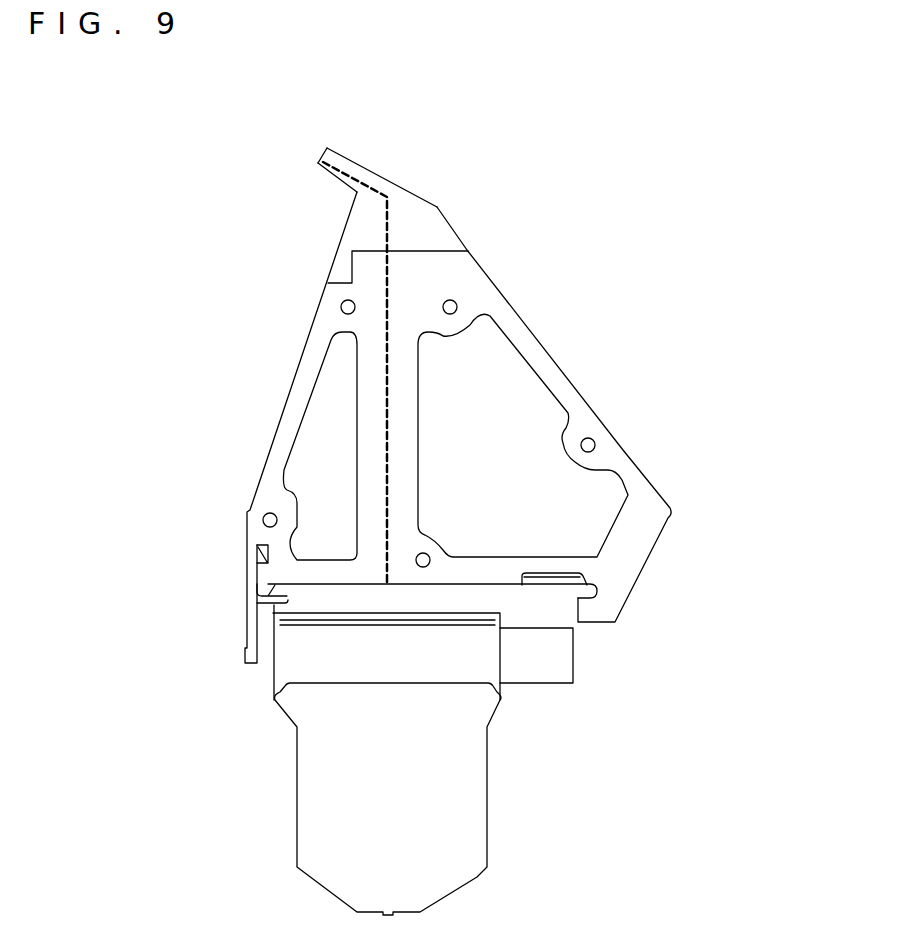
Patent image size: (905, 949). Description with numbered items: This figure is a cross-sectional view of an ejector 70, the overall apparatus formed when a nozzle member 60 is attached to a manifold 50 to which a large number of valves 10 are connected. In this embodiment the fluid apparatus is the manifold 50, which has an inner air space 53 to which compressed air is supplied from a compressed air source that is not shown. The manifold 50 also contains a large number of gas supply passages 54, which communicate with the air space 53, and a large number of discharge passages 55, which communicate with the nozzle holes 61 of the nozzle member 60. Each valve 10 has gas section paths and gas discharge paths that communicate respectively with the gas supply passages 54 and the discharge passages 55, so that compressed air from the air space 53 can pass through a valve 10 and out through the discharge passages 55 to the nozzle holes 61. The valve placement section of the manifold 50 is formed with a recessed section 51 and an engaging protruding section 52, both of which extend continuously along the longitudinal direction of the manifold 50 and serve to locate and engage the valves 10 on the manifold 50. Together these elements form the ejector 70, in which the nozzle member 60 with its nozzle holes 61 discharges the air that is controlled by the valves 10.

The ejector 70 is at (654, 175).
The manifold 50 is at (605, 355).
The nozzle member 60 is at (432, 227).
The nozzle holes 61 is at (323, 155).
The discharge passages 55 is at (387, 350).
The air space 53 is at (330, 427).
The gas supply passages 54 is at (323, 578).
The engaging protruding section 52 is at (268, 573).
The recessed section 51 is at (597, 592).
The valve 10 is at (532, 772).